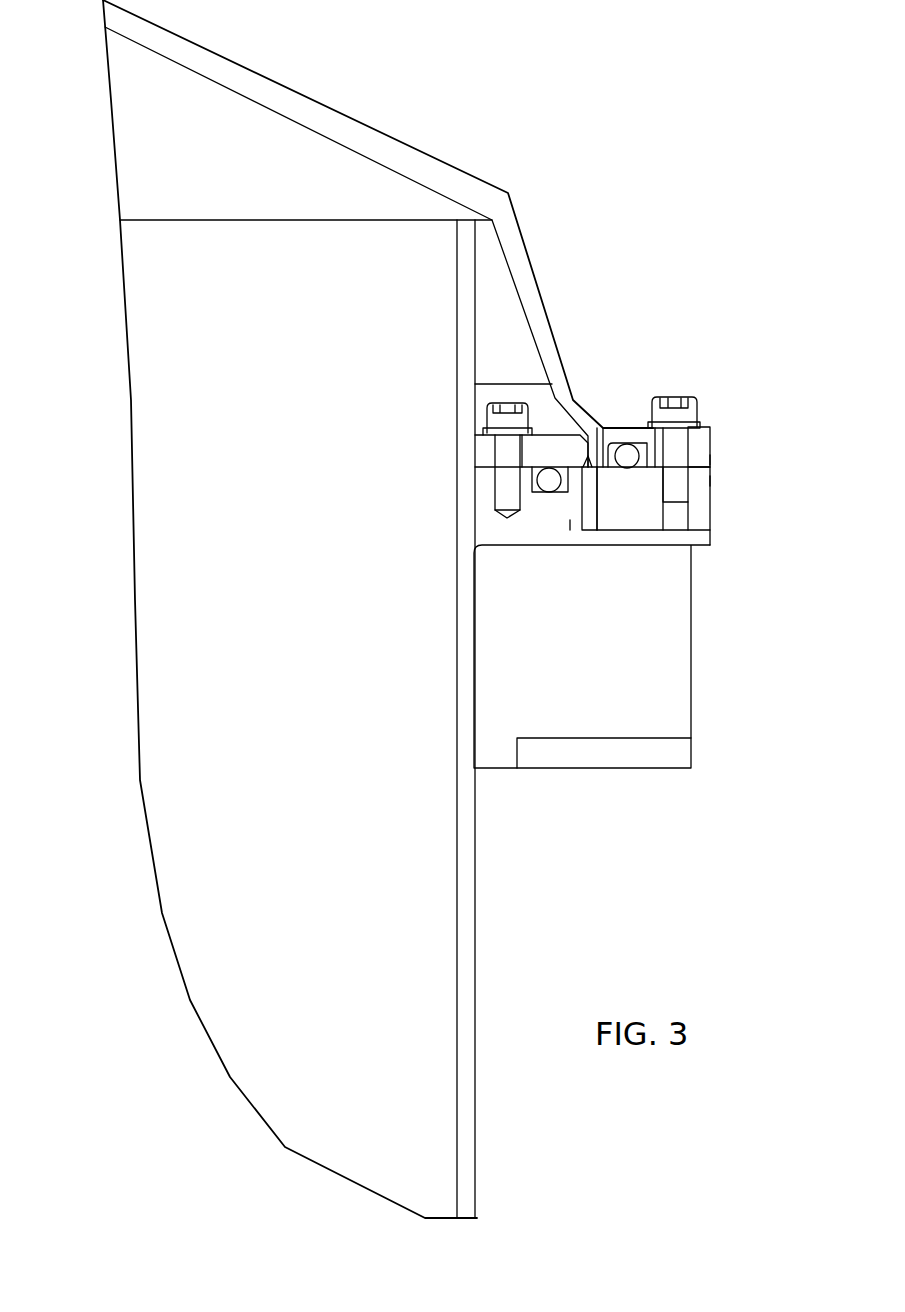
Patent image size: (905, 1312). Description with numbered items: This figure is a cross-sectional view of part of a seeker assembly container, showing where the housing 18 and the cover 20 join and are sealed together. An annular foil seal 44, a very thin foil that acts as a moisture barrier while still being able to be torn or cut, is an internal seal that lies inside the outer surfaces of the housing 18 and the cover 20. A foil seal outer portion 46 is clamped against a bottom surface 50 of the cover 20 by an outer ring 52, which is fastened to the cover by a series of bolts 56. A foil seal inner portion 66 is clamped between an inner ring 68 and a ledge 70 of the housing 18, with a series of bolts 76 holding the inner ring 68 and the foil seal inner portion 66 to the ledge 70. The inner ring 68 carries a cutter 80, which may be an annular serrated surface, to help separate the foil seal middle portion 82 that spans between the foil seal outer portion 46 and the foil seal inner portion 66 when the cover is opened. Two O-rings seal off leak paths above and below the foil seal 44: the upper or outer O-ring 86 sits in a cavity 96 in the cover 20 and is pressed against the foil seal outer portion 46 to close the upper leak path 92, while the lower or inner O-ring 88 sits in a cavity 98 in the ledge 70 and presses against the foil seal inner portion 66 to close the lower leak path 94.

The housing 18 is at (668, 656).
The cover 20 is at (403, 146).
The annular foil seal 44 is at (647, 488).
The foil seal outer portion 46 is at (645, 484).
The bottom surface 50 is at (702, 482).
The outer ring 52 is at (617, 517).
The bolts 56 is at (686, 412).
The foil seal inner portion 66 is at (476, 468).
The inner ring 68 is at (541, 447).
The ledge 70 is at (570, 522).
The bolts 76 is at (509, 430).
The cutter 80 is at (586, 452).
The foil seal middle portion 82 is at (590, 525).
The upper/outer O-ring 86 is at (623, 453).
The lower/inner O-ring 88 is at (540, 496).
The upper leak path 92 is at (730, 460).
The lower leak path 94 is at (730, 481).
The cavity 96 is at (645, 445).
The cavity 98 is at (548, 484).